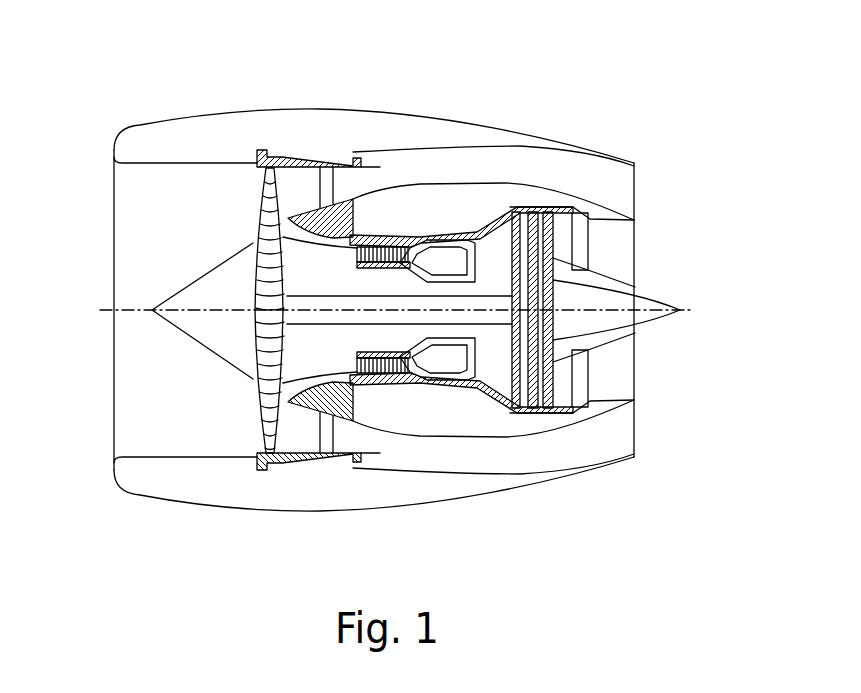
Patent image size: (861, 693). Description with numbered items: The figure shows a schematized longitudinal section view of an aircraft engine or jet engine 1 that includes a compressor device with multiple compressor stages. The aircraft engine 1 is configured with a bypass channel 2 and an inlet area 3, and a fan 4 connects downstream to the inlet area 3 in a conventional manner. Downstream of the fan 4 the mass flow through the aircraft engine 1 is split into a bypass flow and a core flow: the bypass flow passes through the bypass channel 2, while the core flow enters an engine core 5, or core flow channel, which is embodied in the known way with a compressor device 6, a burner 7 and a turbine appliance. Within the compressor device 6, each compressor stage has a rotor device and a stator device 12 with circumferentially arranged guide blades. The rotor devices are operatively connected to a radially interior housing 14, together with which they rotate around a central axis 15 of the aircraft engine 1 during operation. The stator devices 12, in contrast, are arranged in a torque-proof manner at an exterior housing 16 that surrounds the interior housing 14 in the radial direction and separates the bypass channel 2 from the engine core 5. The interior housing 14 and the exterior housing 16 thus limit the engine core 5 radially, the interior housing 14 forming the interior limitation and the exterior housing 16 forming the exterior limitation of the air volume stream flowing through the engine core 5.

The aircraft engine 1 is at (172, 95).
The bypass channel 2 is at (400, 178).
The inlet area 3 is at (126, 192).
The fan 4 is at (253, 165).
The engine core 5 is at (257, 380).
The compressor device 6 is at (375, 240).
The burner 7 is at (462, 248).
The stator device 12 is at (403, 377).
The interior housing 14 is at (390, 367).
The central axis 15 is at (612, 312).
The exterior housing 16 is at (352, 390).